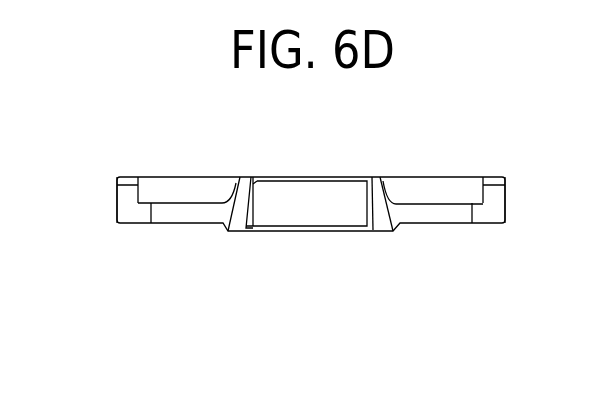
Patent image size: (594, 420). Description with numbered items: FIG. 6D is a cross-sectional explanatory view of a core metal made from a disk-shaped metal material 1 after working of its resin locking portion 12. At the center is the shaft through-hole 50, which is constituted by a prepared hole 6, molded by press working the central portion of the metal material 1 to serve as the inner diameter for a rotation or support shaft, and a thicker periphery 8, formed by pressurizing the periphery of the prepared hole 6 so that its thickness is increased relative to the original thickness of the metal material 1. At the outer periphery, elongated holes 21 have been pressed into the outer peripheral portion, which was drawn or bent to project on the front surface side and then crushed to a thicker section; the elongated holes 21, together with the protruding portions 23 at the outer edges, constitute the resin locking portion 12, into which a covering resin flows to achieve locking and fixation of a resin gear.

The metal material 1 is at (438, 210).
The prepared hole 6 is at (276, 190).
The thicker periphery 8 is at (347, 179).
The resin locking portion 12 is at (332, 208).
The elongated holes 21 is at (133, 217).
The protruding portions 23 is at (128, 178).
The shaft through-hole 50 is at (319, 160).